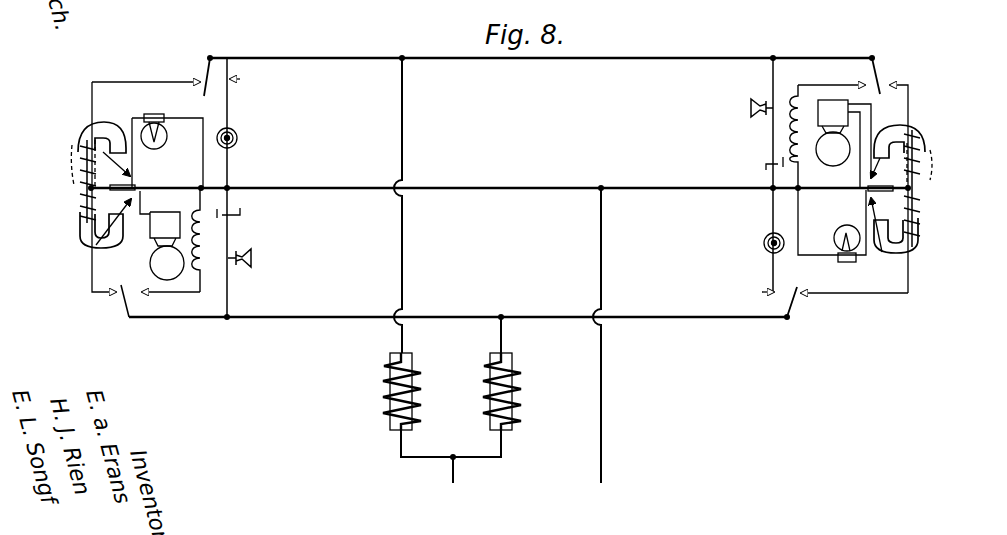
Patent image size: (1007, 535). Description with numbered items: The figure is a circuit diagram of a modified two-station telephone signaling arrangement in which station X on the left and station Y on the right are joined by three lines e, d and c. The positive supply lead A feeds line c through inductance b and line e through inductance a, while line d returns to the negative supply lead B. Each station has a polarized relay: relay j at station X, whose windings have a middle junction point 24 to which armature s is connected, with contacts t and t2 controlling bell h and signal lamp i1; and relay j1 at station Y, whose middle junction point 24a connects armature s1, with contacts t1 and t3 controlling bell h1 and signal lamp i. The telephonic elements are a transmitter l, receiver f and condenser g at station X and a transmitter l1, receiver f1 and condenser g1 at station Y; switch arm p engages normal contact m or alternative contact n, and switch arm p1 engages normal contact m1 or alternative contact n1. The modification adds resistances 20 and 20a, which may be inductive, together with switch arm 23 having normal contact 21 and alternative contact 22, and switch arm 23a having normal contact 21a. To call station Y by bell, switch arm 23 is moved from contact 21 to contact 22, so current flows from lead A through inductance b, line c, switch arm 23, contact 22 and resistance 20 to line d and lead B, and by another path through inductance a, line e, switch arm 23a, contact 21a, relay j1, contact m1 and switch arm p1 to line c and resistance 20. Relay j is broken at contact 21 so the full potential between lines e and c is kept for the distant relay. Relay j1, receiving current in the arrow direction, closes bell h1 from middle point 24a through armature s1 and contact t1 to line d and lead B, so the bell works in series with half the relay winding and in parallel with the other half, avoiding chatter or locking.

The line e is at (512, 58).
The line d is at (493, 188).
The line c is at (486, 317).
The inductance a is at (390, 391).
The inductance b is at (511, 391).
The positive supply lead A is at (451, 470).
The negative supply lead B is at (580, 470).
The station X is at (152, 47).
The station Y is at (858, 35).
The switch arm p is at (208, 57).
The normal contact m is at (200, 80).
The alternative contact n is at (242, 187).
The transmitter l is at (237, 138).
The relay contact t2 is at (100, 124).
The signal lamp i1 is at (167, 136).
The polarized relay j is at (80, 170).
The relay armature s is at (136, 185).
The middle junction point 24 is at (72, 195).
The relay contact t is at (95, 244).
The bell h is at (162, 235).
The condenser g is at (240, 214).
The receiver f is at (252, 258).
The normal contact 21 is at (116, 294).
The alternative contact 22 is at (140, 294).
The switch arm 23 is at (124, 316).
The resistance 20 is at (203, 276).
The receiver f1 is at (750, 108).
The condenser g1 is at (765, 166).
The resistance 20a is at (800, 96).
The switch arm 23a is at (880, 66).
The normal contact 21a is at (888, 86).
The relay contact t1 is at (916, 138).
The bell h1 is at (843, 144).
The relay armature s1 is at (868, 188).
The middle junction point 24a is at (912, 188).
The transmitter l1 is at (764, 243).
The signal lamp i is at (790, 230).
The relay contact t3 is at (884, 256).
The polarized relay j1 is at (918, 258).
The alternative contact n1 is at (755, 179).
The normal contact m1 is at (800, 295).
The switch arm p1 is at (785, 318).